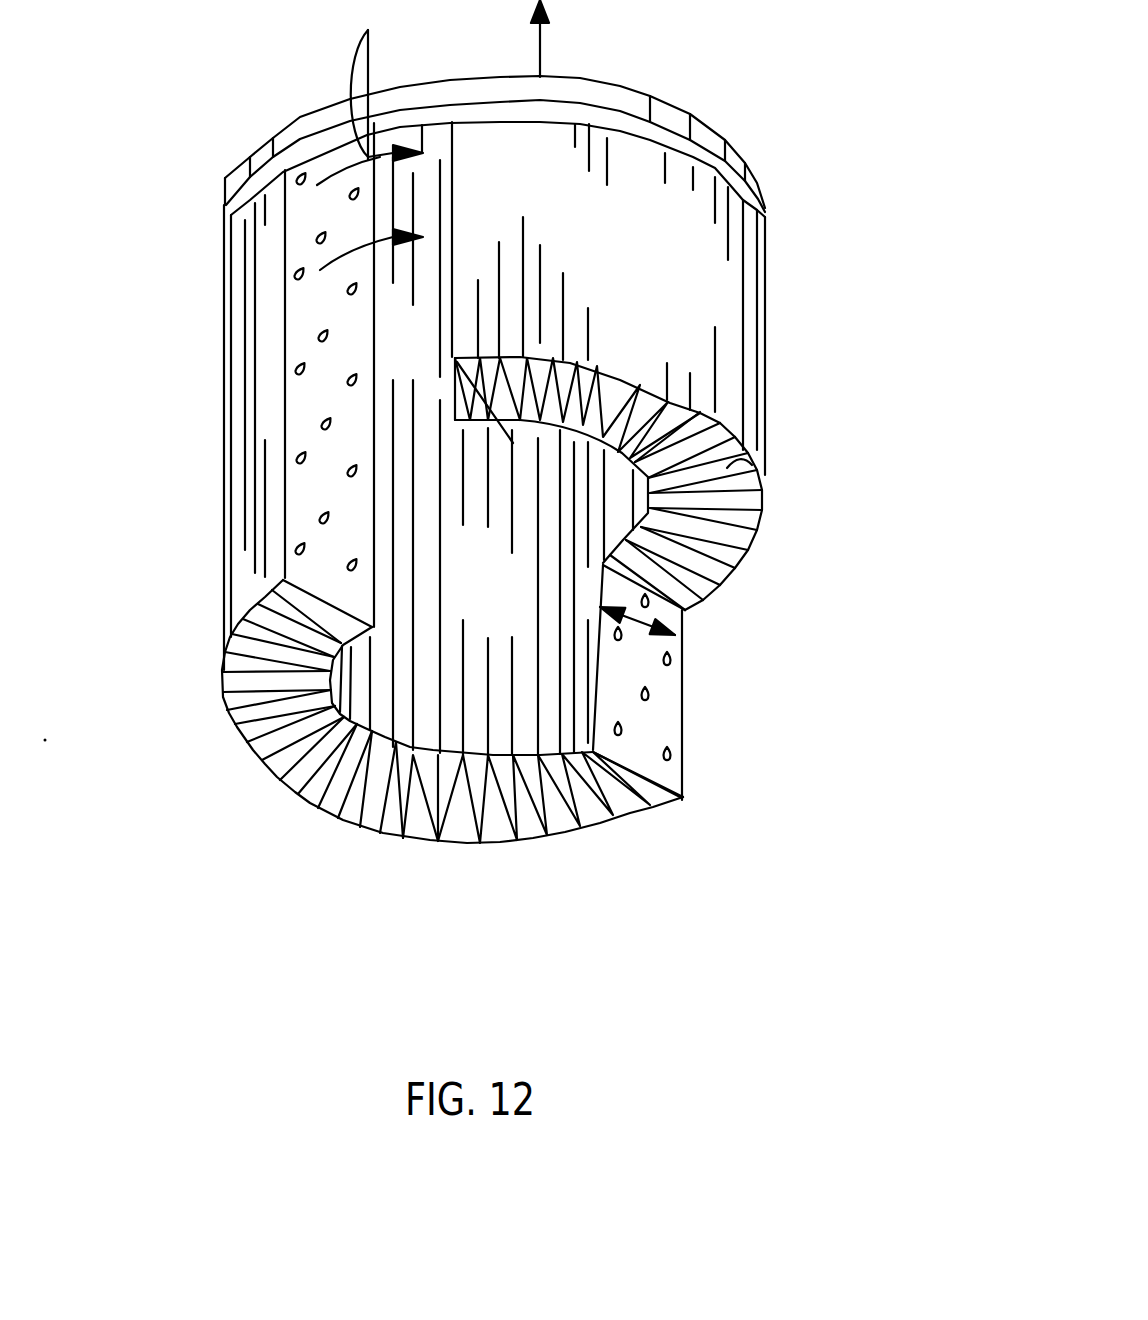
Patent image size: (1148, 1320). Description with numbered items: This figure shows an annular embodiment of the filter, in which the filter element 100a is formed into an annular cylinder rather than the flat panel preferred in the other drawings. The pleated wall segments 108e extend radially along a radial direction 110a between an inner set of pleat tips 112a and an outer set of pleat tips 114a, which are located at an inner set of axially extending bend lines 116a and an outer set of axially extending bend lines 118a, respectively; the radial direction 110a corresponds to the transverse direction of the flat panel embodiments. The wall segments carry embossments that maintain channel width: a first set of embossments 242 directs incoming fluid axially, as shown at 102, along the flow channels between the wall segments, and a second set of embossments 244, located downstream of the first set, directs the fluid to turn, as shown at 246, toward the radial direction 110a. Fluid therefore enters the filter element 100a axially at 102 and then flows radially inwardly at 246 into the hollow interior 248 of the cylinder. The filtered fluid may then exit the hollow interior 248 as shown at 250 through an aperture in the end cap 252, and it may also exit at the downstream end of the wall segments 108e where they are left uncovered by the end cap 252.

The filter element 100a is at (788, 486).
The axial flow direction 102 is at (293, 769).
The wall segments 108e is at (740, 455).
The radial direction 110a is at (600, 607).
The inner set of pleat tips 112a is at (600, 412).
The outer set of pleat tips 114a is at (601, 418).
The inner set of axially extending bend lines 116a is at (490, 358).
The outer set of axially extending bend lines 118a is at (538, 355).
The first set of embossments 242 is at (293, 547).
The second set of embossments 244 is at (349, 193).
The fluid turning flow direction 246 is at (370, 138).
The hollow interior 248 is at (532, 607).
The exit flow direction 250 is at (544, 57).
The end cap 252 is at (672, 112).